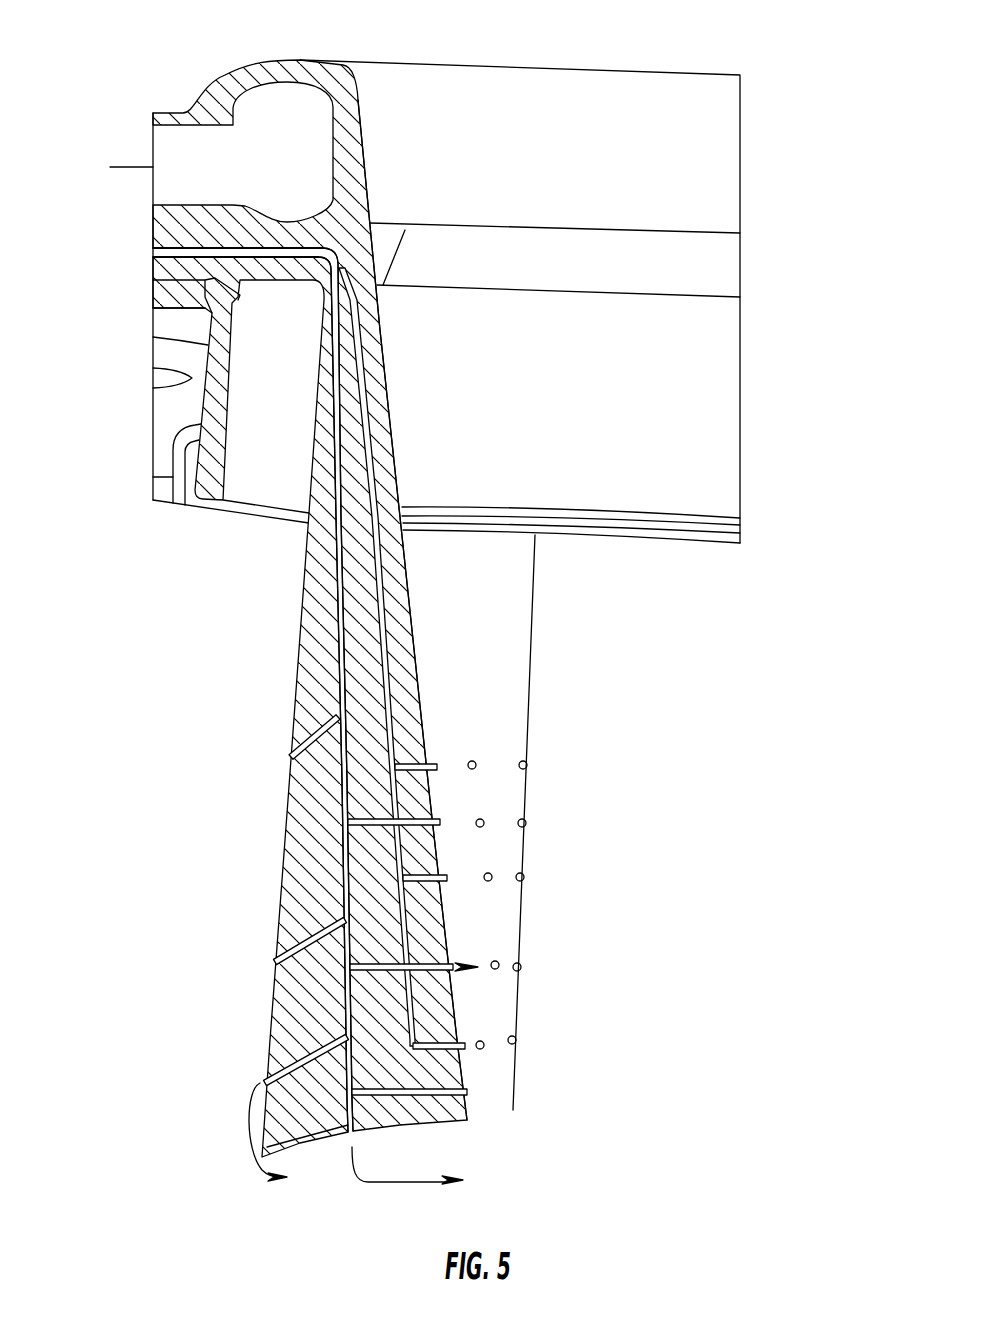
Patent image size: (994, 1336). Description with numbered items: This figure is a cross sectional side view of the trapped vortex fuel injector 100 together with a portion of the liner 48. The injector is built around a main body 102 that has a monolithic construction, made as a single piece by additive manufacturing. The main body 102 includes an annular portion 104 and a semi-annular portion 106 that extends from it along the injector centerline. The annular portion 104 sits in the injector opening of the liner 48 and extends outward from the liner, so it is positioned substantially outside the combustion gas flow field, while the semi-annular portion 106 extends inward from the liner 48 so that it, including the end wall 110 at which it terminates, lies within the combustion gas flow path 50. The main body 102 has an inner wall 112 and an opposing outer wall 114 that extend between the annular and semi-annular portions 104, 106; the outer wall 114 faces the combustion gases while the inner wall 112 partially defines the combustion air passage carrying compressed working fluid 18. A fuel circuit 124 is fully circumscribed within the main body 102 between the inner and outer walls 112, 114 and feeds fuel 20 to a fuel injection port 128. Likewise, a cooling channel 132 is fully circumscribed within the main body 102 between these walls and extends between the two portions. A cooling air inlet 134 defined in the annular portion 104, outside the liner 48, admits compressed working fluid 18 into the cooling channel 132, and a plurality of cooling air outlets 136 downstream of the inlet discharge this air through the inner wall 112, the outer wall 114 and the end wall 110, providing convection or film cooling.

The compressed working fluid 18 is at (456, 971).
The fuel 20 is at (133, 160).
The liner 48 is at (153, 487).
The combustion gas flow path 50 is at (150, 868).
The trapped vortex fuel injector 100 is at (721, 56).
The main body 102 is at (717, 163).
The annular portion 104 is at (735, 358).
The semi-annular portion 106 is at (632, 728).
The end wall 110 is at (352, 1160).
The inner wall 112 is at (510, 705).
The outer wall 114 is at (288, 808).
The fuel circuit 124 is at (397, 740).
The fuel injection port 128 is at (437, 767).
The cooling channel 132 is at (158, 250).
The cooling air inlet 134 is at (153, 243).
The cooling air outlet 136 is at (440, 822).